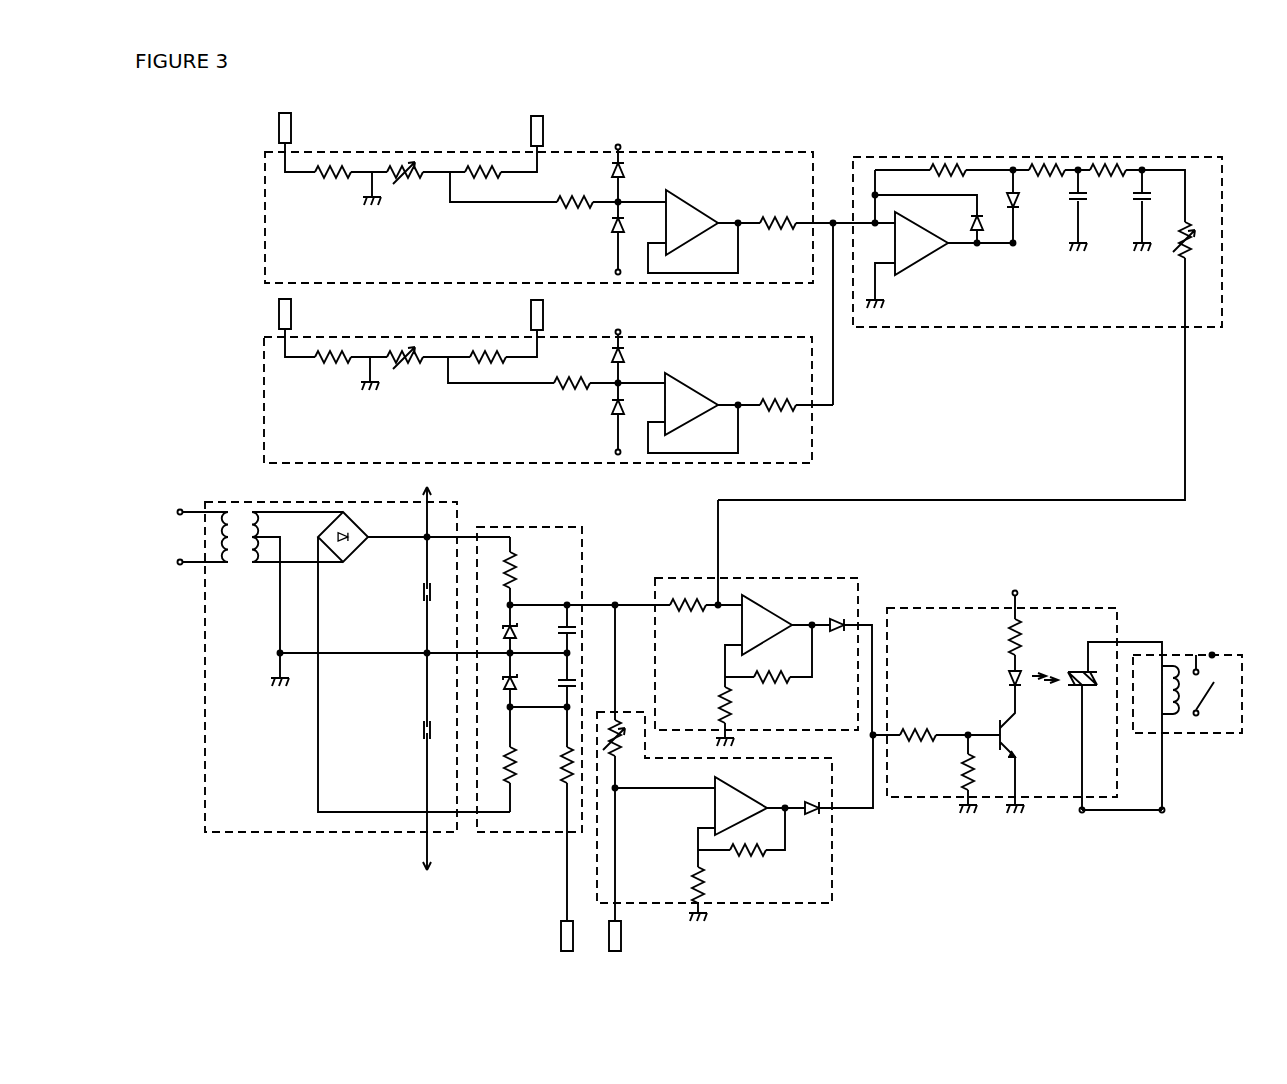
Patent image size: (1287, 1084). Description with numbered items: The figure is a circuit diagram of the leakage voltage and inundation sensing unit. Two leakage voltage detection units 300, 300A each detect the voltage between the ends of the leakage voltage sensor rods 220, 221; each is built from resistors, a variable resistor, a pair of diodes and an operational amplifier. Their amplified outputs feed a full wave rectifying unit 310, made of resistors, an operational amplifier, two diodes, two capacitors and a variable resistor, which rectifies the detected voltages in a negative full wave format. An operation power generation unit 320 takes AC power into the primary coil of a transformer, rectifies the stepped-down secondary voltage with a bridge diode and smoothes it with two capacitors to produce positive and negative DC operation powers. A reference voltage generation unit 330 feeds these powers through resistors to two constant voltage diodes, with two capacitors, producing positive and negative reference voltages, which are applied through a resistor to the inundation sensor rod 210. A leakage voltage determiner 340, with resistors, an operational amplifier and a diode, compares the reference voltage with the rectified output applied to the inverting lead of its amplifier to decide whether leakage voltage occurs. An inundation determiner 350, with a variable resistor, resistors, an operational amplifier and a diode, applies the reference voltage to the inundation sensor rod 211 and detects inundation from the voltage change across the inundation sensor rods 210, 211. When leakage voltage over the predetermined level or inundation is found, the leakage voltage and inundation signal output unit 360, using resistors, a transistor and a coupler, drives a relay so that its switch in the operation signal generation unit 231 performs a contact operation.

The leakage voltage sensor rod 220 is at (279, 316).
The leakage voltage sensor rod 221 is at (531, 318).
The leakage voltage detection unit 300 is at (690, 152).
The leakage voltage detection unit 300A is at (264, 415).
The full wave rectifying unit 310 is at (1035, 329).
The operation power generation unit 320 is at (290, 833).
The reference voltage generation unit 330 is at (525, 833).
The leakage voltage determiner 340 is at (790, 578).
The inundation determiner 350 is at (832, 863).
The leakage voltage and inundation signal output unit 360 is at (1070, 608).
The inundation sensor rod 210 is at (560, 938).
The inundation sensor rod 211 is at (622, 932).
The operation signal generation unit 231 is at (1212, 655).